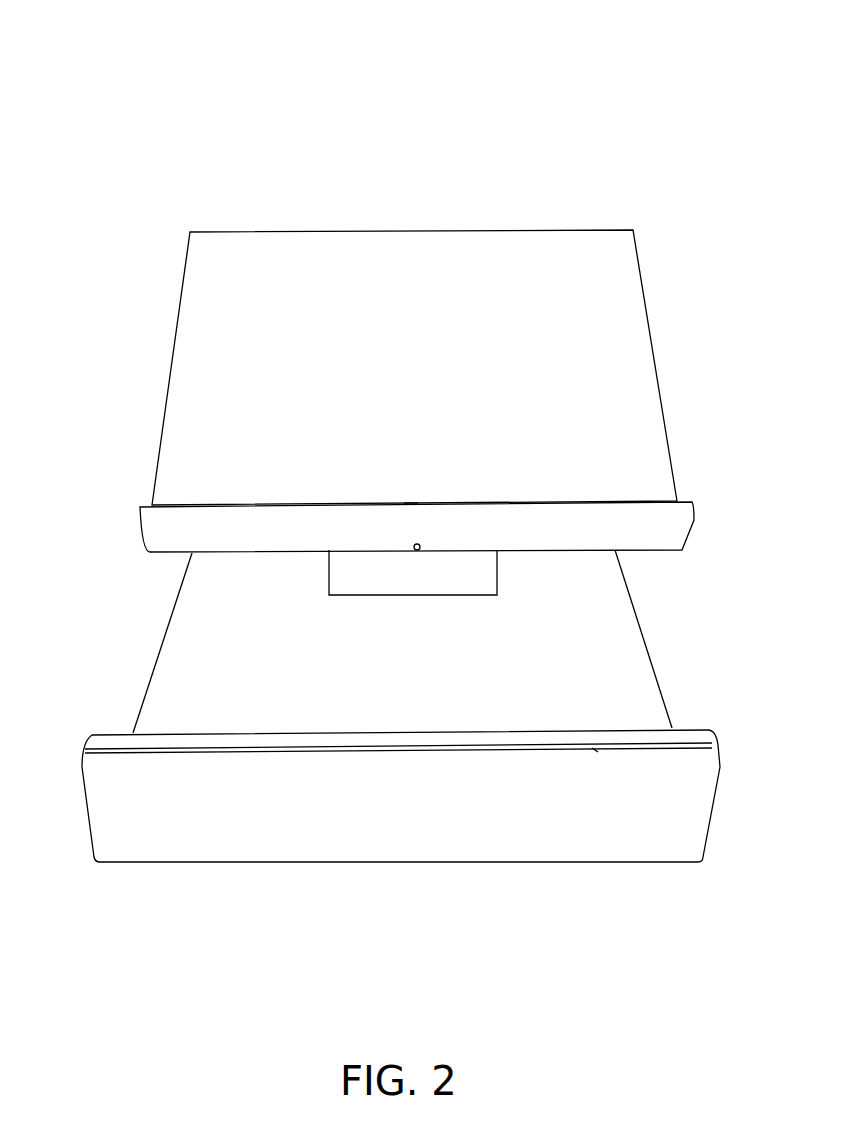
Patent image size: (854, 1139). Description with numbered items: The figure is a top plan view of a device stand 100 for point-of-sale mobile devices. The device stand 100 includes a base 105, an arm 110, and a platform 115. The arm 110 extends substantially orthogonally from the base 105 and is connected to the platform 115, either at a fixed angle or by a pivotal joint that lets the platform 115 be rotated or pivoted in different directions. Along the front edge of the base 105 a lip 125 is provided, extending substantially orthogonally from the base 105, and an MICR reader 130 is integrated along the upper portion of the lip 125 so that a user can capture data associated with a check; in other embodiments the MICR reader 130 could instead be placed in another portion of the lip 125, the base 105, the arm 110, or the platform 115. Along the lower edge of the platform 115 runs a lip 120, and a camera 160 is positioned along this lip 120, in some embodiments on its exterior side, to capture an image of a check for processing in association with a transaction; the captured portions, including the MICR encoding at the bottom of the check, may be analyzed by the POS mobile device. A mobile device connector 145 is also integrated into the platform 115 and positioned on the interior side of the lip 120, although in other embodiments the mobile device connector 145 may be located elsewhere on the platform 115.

The device stand 100 is at (675, 46).
The base 105 is at (643, 640).
The arm 110 is at (497, 597).
The platform 115 is at (626, 223).
The lip 120 is at (140, 507).
The lip 125 is at (180, 842).
The MICR reader 130 is at (595, 750).
The mobile device connector 145 is at (412, 503).
The camera 160 is at (419, 544).